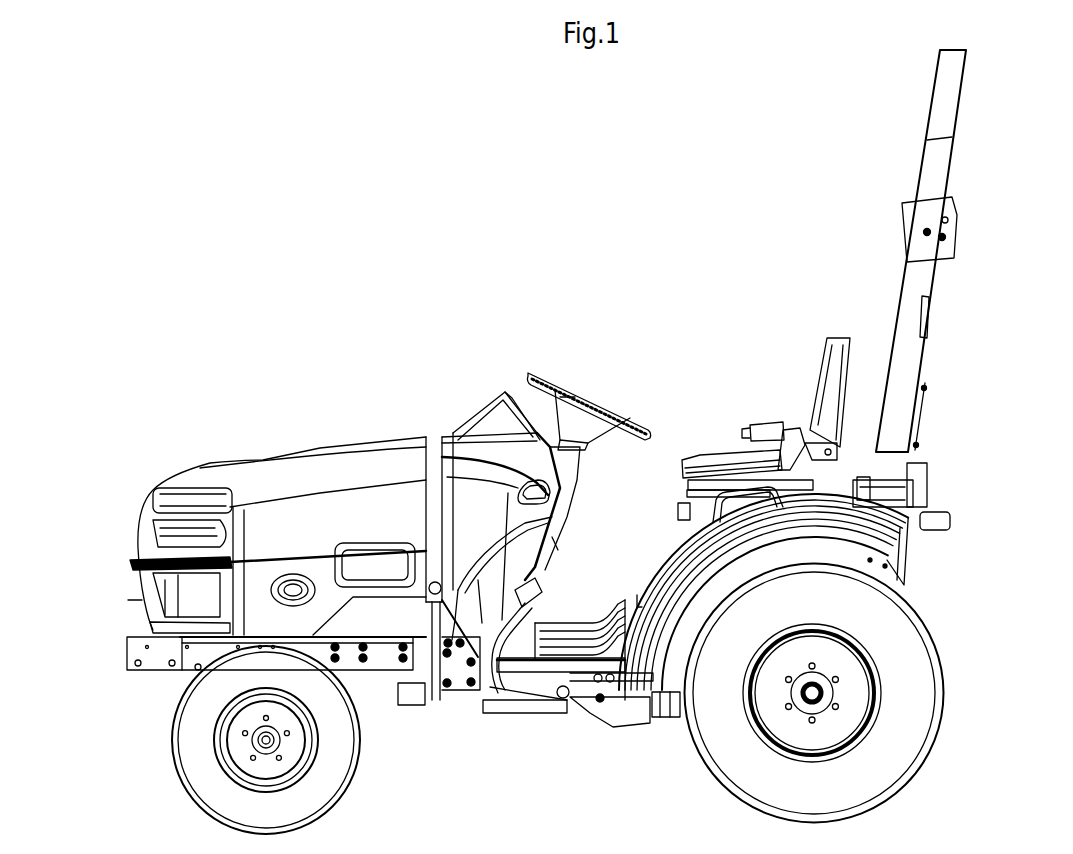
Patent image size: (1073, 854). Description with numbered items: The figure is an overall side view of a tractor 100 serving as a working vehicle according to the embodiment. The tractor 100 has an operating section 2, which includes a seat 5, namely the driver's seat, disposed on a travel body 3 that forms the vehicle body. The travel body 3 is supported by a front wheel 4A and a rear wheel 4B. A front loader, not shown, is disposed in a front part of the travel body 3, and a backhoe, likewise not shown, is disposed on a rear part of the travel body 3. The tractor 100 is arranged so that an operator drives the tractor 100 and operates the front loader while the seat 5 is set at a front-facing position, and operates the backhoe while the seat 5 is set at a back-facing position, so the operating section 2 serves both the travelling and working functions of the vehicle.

The tractor 100 is at (558, 238).
The operating section 2 is at (645, 326).
The travel body 3 is at (150, 444).
The front wheel 4A is at (178, 774).
The rear wheel 4B is at (933, 710).
The seat 5 is at (830, 335).